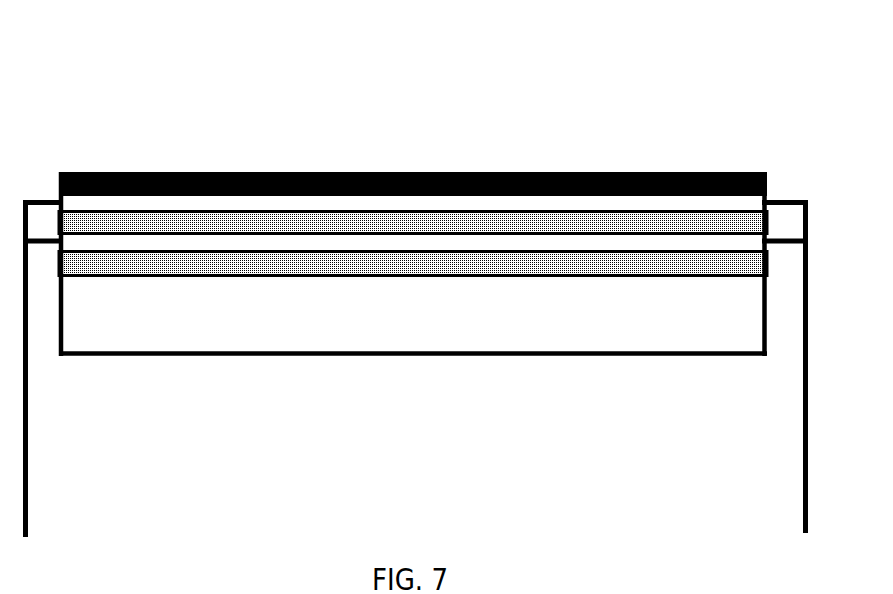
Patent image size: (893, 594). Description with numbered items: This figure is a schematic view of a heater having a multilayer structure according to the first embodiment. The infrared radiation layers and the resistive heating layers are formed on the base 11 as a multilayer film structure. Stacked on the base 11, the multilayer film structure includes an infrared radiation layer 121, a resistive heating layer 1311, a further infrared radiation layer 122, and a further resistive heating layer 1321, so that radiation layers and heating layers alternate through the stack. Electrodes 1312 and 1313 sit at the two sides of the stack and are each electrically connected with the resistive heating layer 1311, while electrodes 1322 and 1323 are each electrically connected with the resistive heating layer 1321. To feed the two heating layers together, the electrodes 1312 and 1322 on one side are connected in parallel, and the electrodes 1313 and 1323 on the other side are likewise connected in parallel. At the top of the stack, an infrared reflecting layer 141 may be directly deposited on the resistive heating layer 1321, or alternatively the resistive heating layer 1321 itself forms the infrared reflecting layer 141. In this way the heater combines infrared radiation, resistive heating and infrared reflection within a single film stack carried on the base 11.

The base 11 is at (517, 333).
The infrared radiation layer 121 is at (353, 260).
The infrared radiation layer 122 is at (260, 222).
The infrared reflecting layer 141 is at (593, 172).
The resistive heating layer 1311 is at (648, 243).
The electrode 1312 is at (787, 245).
The electrode 1313 is at (45, 243).
The resistive heating layer 1321 is at (470, 205).
The electrode 1322 is at (785, 199).
The electrode 1323 is at (40, 199).